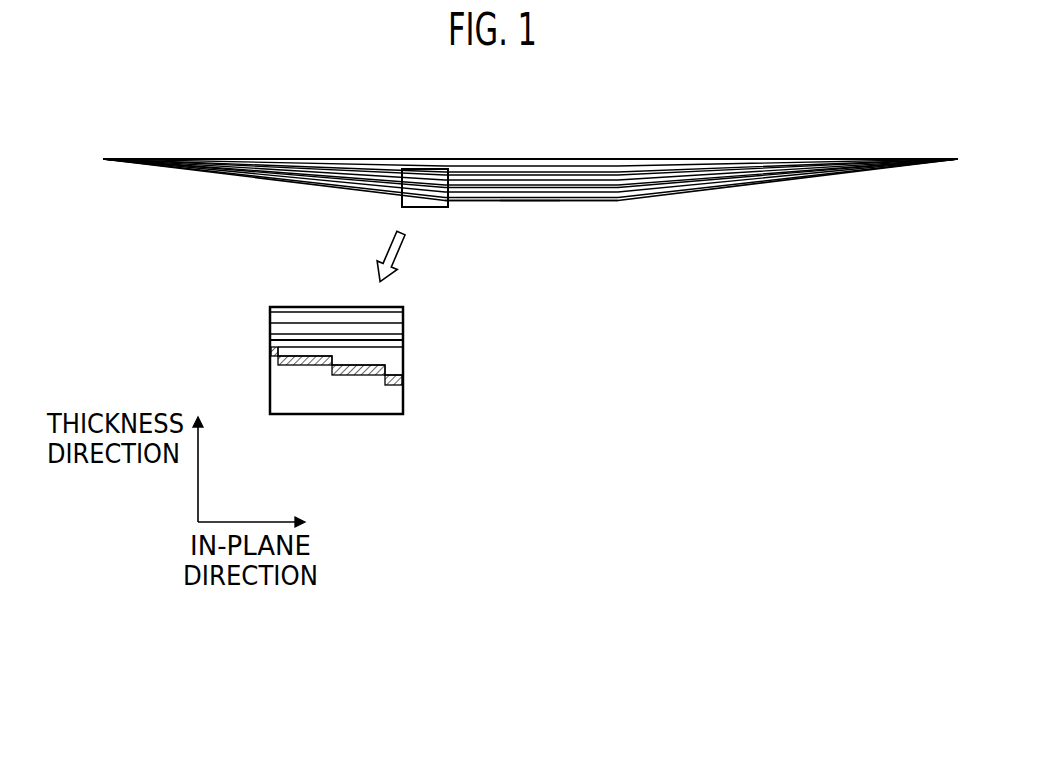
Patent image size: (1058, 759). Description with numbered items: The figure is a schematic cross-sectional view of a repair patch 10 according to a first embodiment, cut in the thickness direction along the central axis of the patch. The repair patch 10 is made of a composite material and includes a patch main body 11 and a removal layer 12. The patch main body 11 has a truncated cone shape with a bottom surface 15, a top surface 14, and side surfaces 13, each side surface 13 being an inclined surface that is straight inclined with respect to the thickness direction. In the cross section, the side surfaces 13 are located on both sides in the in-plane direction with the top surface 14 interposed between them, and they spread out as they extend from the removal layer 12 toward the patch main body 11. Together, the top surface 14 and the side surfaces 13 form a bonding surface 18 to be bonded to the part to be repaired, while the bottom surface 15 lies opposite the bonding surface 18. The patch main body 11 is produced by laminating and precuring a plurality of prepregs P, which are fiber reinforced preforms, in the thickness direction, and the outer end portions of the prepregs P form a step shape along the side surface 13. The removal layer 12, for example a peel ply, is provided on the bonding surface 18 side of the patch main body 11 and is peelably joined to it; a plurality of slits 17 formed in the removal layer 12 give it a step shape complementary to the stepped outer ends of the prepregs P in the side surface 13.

The repair patch 10 is at (594, 127).
The patch main body 11 is at (708, 158).
The removal layer 12 is at (708, 192).
The side surface 13 is at (290, 185).
The top surface 14 is at (596, 203).
The bottom surface 15 is at (500, 158).
The slits 17 is at (325, 367).
The bonding surface 18 is at (531, 210).
The prepregs P is at (405, 315).